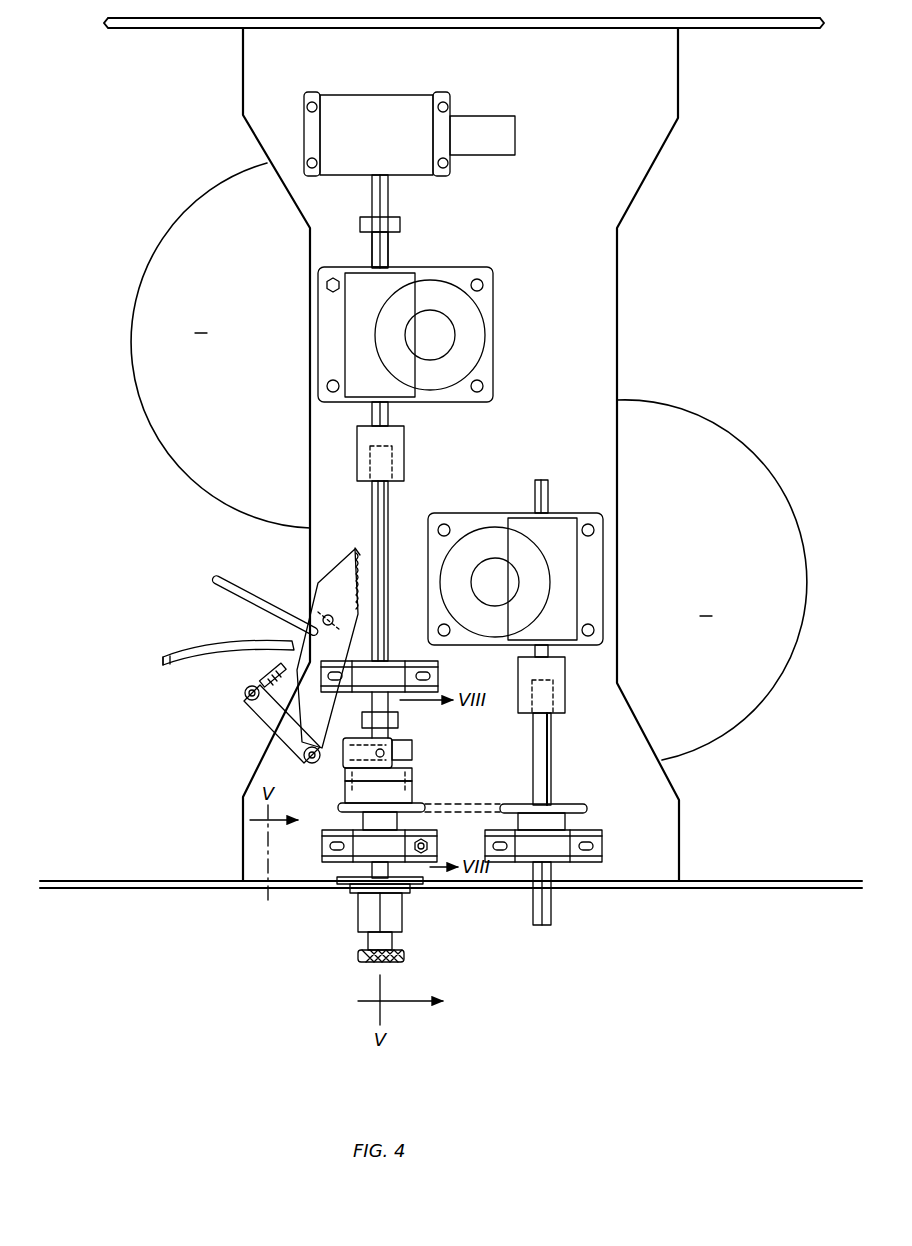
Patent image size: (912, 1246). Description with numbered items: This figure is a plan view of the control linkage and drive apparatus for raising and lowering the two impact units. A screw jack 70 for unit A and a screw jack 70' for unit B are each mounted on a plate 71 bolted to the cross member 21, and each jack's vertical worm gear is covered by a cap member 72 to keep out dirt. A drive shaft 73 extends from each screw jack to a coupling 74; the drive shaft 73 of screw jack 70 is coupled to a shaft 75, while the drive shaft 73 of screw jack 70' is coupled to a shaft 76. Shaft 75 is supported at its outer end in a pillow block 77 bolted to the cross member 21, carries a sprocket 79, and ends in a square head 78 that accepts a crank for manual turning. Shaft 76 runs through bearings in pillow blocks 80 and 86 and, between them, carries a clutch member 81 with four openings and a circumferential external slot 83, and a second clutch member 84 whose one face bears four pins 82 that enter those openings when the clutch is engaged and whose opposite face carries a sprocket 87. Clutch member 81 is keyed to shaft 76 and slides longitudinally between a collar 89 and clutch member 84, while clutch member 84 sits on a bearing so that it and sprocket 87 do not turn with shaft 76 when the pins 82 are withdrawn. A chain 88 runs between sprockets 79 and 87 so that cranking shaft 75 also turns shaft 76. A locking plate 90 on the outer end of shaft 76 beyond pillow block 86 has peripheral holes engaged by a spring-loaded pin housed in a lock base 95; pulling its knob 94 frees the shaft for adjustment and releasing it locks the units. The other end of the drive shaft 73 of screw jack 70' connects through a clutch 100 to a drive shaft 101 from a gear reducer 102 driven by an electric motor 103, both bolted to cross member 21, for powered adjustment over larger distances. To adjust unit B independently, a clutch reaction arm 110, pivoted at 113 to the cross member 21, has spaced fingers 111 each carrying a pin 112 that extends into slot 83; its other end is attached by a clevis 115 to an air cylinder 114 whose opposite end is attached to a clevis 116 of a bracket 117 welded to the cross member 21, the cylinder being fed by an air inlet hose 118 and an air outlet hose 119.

The cross member 21 is at (606, 240).
The gear reducer 102 is at (385, 108).
The electric motor 103 is at (492, 125).
The drive shaft 101 is at (388, 195).
The clutch 100 is at (400, 226).
The screw jack 70' is at (364, 309).
The screw jack 70 is at (545, 547).
The plate 71 is at (470, 272).
The cap member 72 is at (468, 327).
The drive shaft 73 is at (392, 240).
The coupling 74 is at (400, 452).
The shaft 75 is at (540, 755).
The shaft 76 is at (384, 504).
The pillow block 77 is at (598, 836).
The square head 78 is at (552, 920).
The sprocket 79 is at (585, 805).
The pillow block 80 is at (440, 676).
The clutch member 81 is at (412, 765).
The pins 82 is at (410, 777).
The external slot 83 is at (410, 746).
The clutch member 84 is at (425, 802).
The pillow block 86 is at (437, 850).
The sprocket 87 is at (340, 813).
The chain 88 is at (490, 805).
The collar 89 is at (370, 722).
The locking plate 90 is at (345, 880).
The knob 94 is at (358, 955).
The lock base 95 is at (405, 908).
The clutch reaction arm 110 is at (272, 710).
The fingers 111 is at (345, 752).
The pin 112 is at (382, 750).
The pivot 113 is at (300, 755).
The air cylinder 114 is at (285, 643).
The clevis 115 is at (258, 685).
The clevis 116 is at (322, 600).
The bracket 117 is at (352, 542).
The air inlet hose 118 is at (187, 650).
The air outlet hose 119 is at (245, 590).